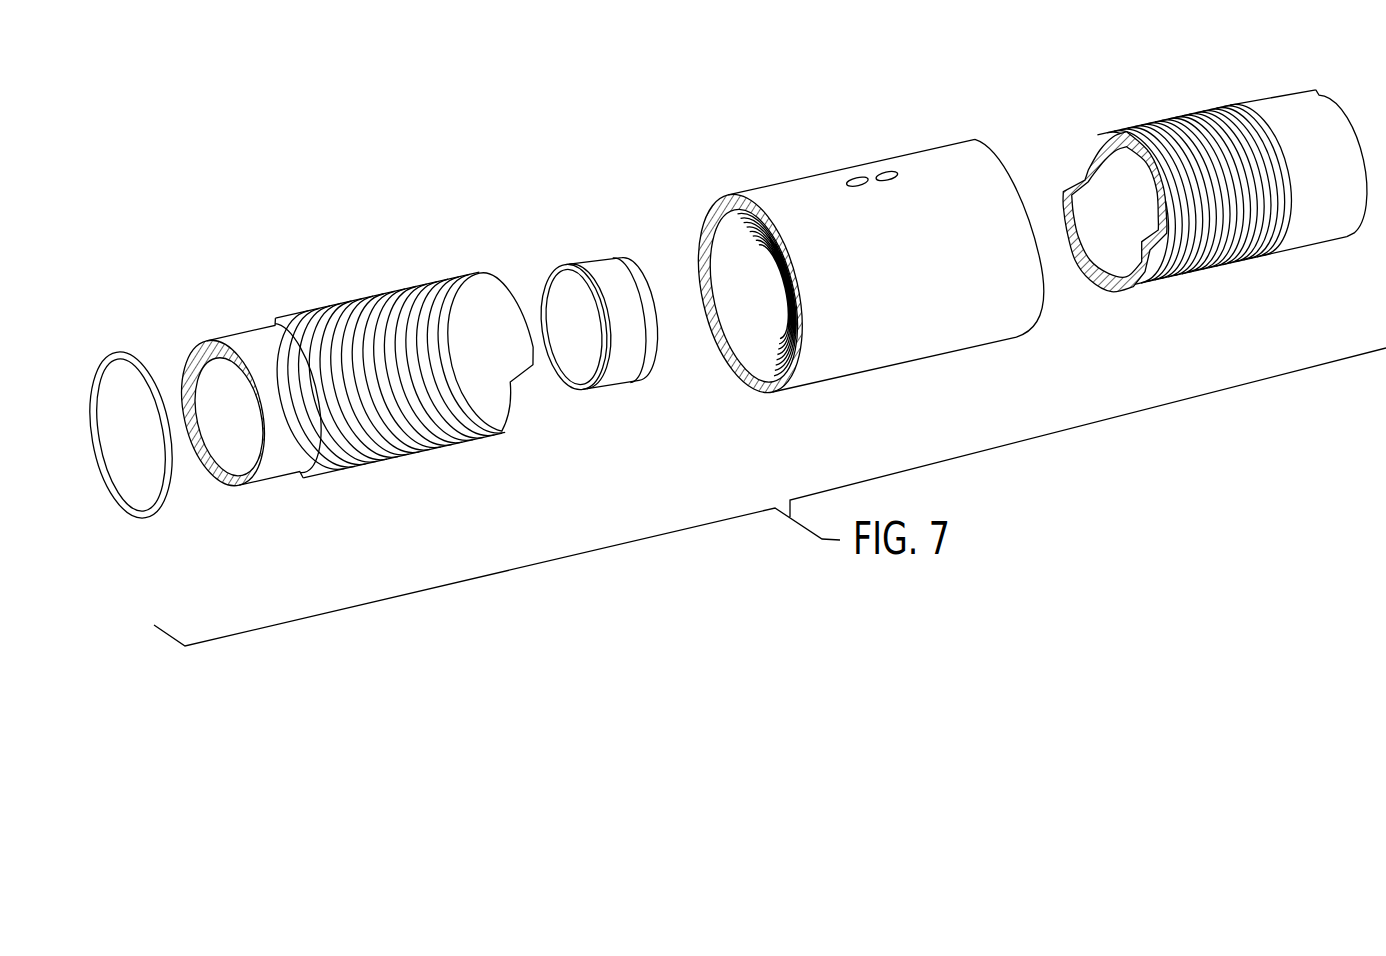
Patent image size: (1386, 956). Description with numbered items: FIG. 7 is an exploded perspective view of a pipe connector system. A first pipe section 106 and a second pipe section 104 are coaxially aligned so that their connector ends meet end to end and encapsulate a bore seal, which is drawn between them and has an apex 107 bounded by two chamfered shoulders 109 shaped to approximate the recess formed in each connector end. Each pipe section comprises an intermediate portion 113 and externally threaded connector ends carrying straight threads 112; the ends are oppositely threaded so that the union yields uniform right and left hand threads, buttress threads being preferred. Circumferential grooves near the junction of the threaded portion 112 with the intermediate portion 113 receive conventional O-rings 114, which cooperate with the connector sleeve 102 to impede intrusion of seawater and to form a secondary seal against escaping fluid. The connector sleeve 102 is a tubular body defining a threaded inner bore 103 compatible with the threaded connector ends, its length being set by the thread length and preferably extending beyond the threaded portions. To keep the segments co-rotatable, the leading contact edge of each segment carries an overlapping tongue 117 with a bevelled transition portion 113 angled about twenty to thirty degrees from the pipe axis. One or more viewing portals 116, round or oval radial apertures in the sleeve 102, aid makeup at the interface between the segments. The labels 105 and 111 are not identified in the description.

The connector sleeve 102 is at (788, 160).
The threaded inner bore 103 is at (763, 337).
The second pipe section 104 is at (1268, 100).
The threaded nipple fitting 105 is at (367, 489).
The first pipe section 106 is at (247, 332).
The apex 107 is at (592, 262).
The chamfered shoulders 109 is at (567, 272).
The end face 111 is at (1145, 293).
The threads 112 is at (427, 453).
The intermediate portion 113 is at (1130, 128).
The O-rings 114 is at (158, 510).
The viewing portals 116 is at (885, 175).
The overlapping tongue 117 is at (470, 280).